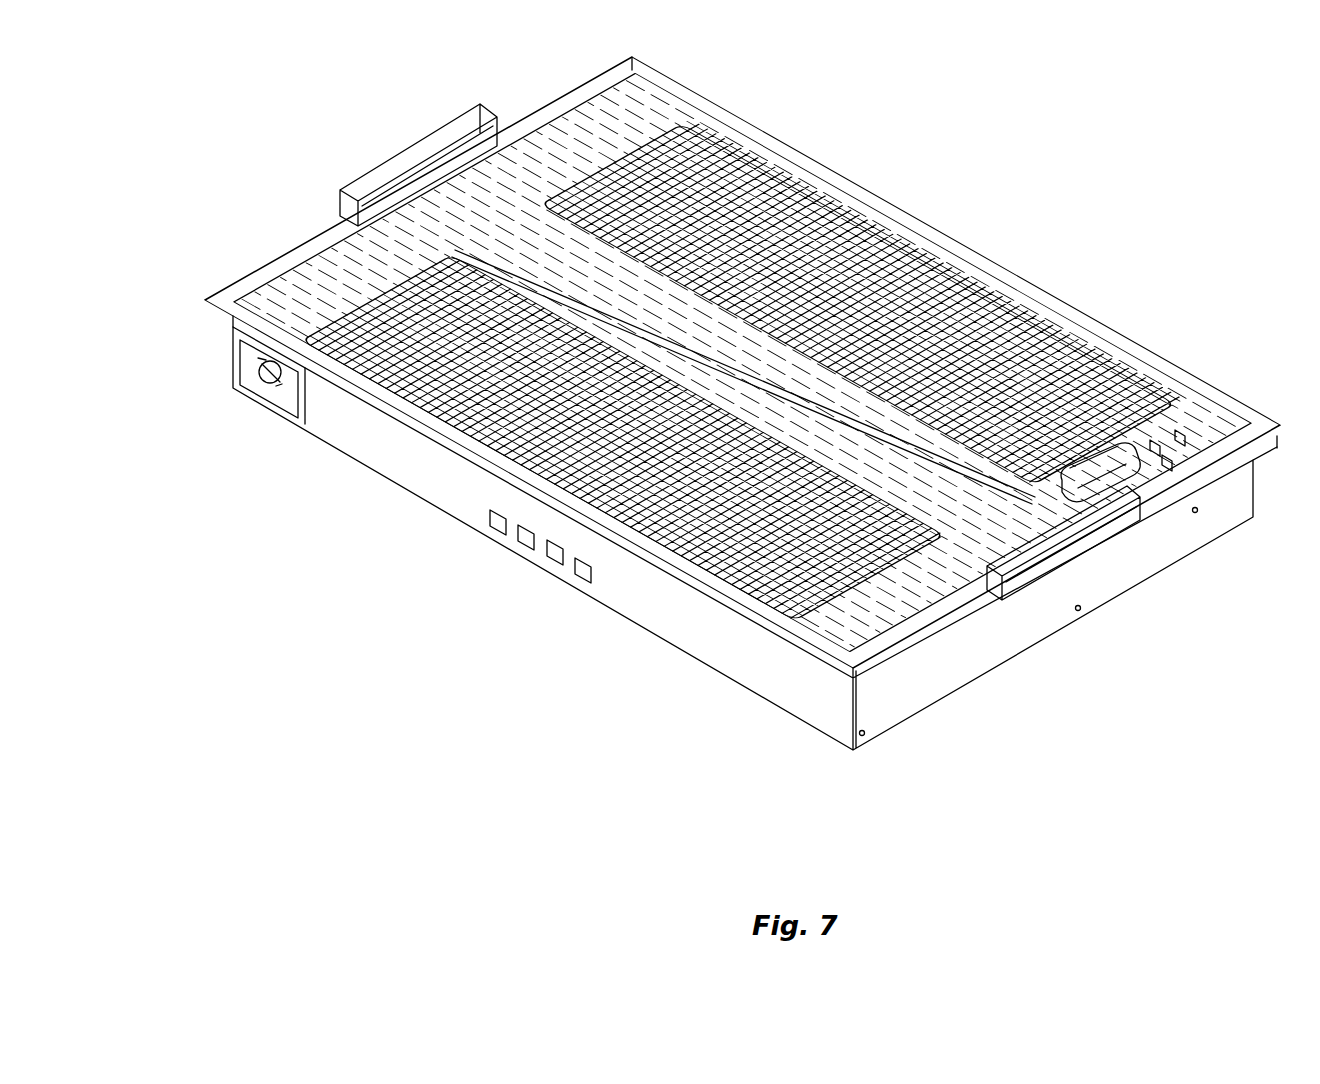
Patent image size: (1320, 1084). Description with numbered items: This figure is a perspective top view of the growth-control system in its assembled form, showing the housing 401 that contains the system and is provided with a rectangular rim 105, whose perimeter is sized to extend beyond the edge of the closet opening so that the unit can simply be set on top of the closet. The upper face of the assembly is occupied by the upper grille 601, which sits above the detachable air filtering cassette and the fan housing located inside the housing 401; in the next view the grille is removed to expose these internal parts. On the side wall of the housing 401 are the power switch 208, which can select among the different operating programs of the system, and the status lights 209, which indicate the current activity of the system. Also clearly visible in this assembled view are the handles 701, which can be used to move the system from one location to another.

The rim 105 is at (232, 306).
The power switch 208 is at (266, 393).
The status lights 209 is at (518, 556).
The housing 401 is at (1140, 558).
The upper grille 601 is at (994, 326).
The handles 701 is at (400, 160).